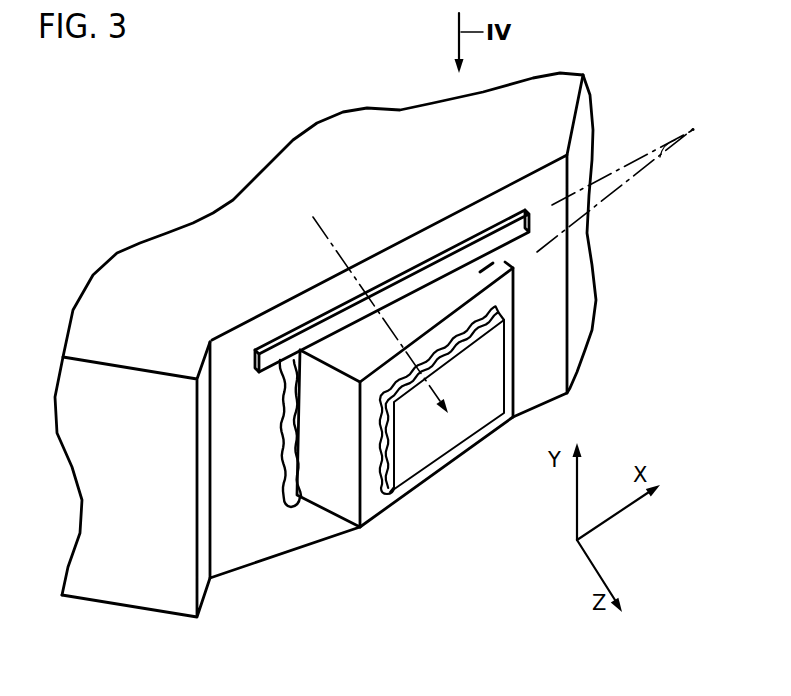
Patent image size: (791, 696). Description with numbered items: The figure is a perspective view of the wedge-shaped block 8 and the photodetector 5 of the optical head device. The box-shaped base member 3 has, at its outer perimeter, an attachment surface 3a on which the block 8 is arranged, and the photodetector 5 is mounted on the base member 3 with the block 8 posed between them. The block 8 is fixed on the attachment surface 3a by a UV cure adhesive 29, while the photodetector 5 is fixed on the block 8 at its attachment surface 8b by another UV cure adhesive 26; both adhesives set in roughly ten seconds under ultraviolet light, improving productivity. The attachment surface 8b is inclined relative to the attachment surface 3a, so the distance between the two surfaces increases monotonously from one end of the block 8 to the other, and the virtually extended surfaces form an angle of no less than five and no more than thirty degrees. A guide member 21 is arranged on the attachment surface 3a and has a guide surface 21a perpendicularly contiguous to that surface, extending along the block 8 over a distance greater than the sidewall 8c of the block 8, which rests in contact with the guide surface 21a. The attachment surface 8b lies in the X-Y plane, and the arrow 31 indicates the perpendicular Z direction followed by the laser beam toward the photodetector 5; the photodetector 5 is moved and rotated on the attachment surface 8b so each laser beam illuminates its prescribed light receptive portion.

The base member 3 is at (632, 87).
The attachment surface 3a is at (633, 338).
The guide member 21 is at (403, 273).
The guide surface 21a is at (258, 597).
The UV cure adhesive 29 is at (305, 575).
The block 8 is at (333, 603).
The attachment surface 8b is at (403, 532).
The sidewall 8c is at (633, 262).
The photodetector 5 is at (458, 492).
The UV cure adhesive 26 is at (363, 555).
The arrow 31 is at (330, 243).